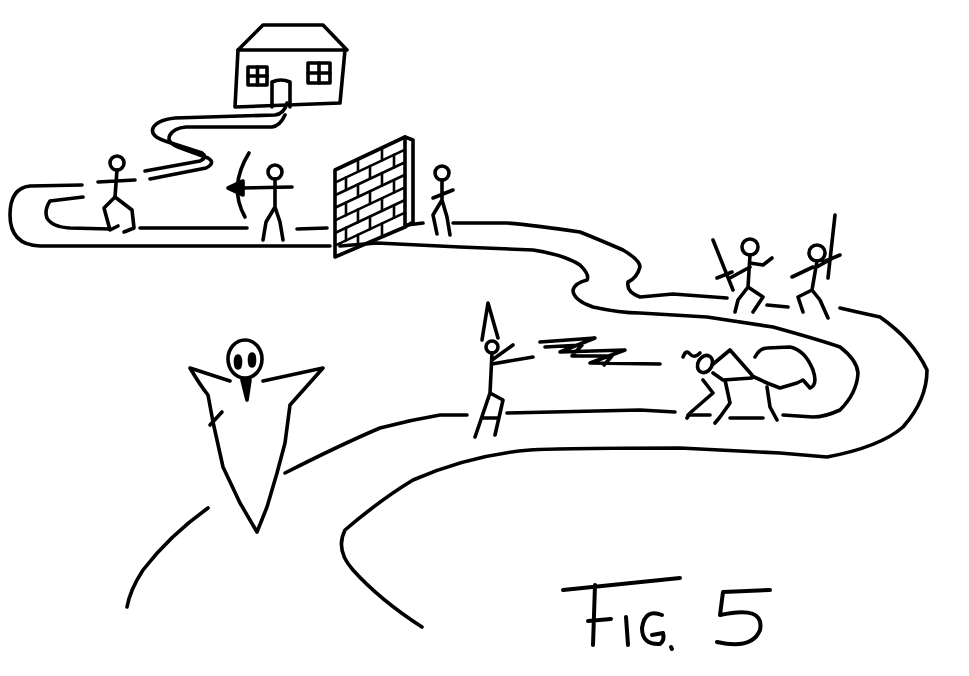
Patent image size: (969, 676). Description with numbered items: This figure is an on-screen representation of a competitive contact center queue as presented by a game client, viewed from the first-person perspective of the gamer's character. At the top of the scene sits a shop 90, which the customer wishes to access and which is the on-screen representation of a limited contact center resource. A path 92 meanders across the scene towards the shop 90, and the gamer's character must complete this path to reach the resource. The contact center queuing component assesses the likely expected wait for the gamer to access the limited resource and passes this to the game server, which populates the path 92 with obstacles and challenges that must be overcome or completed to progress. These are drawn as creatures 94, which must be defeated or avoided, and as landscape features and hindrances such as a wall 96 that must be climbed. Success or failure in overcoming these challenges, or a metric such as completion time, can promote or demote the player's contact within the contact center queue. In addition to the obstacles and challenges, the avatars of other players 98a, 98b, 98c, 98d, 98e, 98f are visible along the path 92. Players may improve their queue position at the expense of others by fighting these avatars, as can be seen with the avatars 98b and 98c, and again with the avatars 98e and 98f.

The shop 90 is at (347, 70).
The path 92 is at (618, 200).
The creatures 94 is at (218, 417).
The wall 96 is at (418, 138).
The avatar 98a is at (483, 347).
The avatar 98b is at (815, 243).
The avatar 98c is at (750, 240).
The avatar 98d is at (450, 168).
The avatar 98e is at (282, 166).
The avatar 98f is at (115, 156).